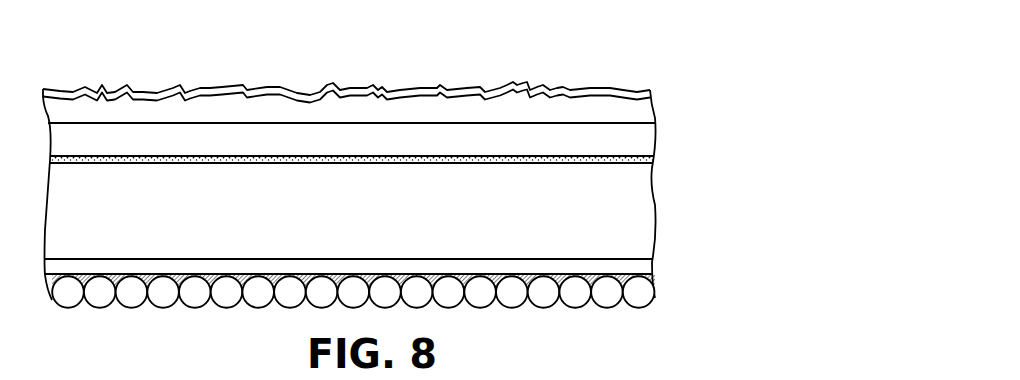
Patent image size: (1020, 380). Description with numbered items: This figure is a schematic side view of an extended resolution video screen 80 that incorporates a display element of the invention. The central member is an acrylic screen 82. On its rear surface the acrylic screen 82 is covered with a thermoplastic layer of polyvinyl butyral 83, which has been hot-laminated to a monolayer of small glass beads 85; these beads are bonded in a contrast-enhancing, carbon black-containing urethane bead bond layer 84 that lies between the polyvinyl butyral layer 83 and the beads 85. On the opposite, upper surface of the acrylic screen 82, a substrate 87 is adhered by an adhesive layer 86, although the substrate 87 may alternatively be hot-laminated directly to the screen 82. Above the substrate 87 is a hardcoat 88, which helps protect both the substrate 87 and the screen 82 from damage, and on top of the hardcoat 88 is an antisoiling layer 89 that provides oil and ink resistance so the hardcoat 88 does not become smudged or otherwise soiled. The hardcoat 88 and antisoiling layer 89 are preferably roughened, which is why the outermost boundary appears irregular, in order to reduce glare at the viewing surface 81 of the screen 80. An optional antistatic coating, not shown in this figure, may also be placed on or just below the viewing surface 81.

The extended resolution video screen 80 is at (571, 48).
The viewing surface 81 is at (142, 92).
The antisoiling layer 89 is at (648, 93).
The hardcoat 88 is at (643, 110).
The substrate 87 is at (642, 134).
The adhesive layer 86 is at (650, 160).
The acrylic screen 82 is at (642, 220).
The thermoplastic layer of polyvinyl butyral 83 is at (647, 267).
The bead bond layer 84 is at (652, 278).
The glass beads 85 is at (640, 298).